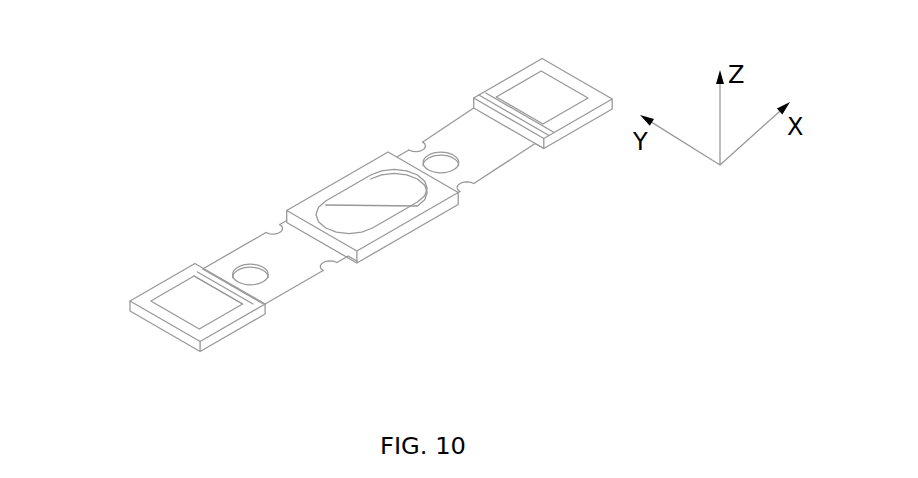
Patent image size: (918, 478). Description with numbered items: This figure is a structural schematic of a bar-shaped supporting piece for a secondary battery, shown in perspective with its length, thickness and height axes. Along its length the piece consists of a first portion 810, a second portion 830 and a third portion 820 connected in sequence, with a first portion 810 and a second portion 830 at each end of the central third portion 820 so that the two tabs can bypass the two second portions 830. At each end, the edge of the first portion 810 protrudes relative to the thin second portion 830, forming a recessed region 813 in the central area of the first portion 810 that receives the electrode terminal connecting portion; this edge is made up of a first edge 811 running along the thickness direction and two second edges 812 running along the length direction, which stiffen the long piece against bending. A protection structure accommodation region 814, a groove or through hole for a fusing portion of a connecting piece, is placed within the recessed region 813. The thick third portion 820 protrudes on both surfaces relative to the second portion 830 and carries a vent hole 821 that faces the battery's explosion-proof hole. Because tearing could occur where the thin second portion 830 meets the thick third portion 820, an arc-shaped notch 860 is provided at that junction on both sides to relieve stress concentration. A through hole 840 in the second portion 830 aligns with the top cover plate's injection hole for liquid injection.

The first portion 810 is at (353, 216).
The first edge 811 is at (150, 323).
The second edge 812 is at (173, 283).
The recessed region 813 is at (207, 297).
The protection structure accommodation region 814 is at (552, 118).
The third portion 820 is at (337, 167).
The vent hole 821 is at (376, 197).
The second portion 830 is at (442, 217).
The through hole 840 is at (440, 160).
The notch 860 is at (520, 173).